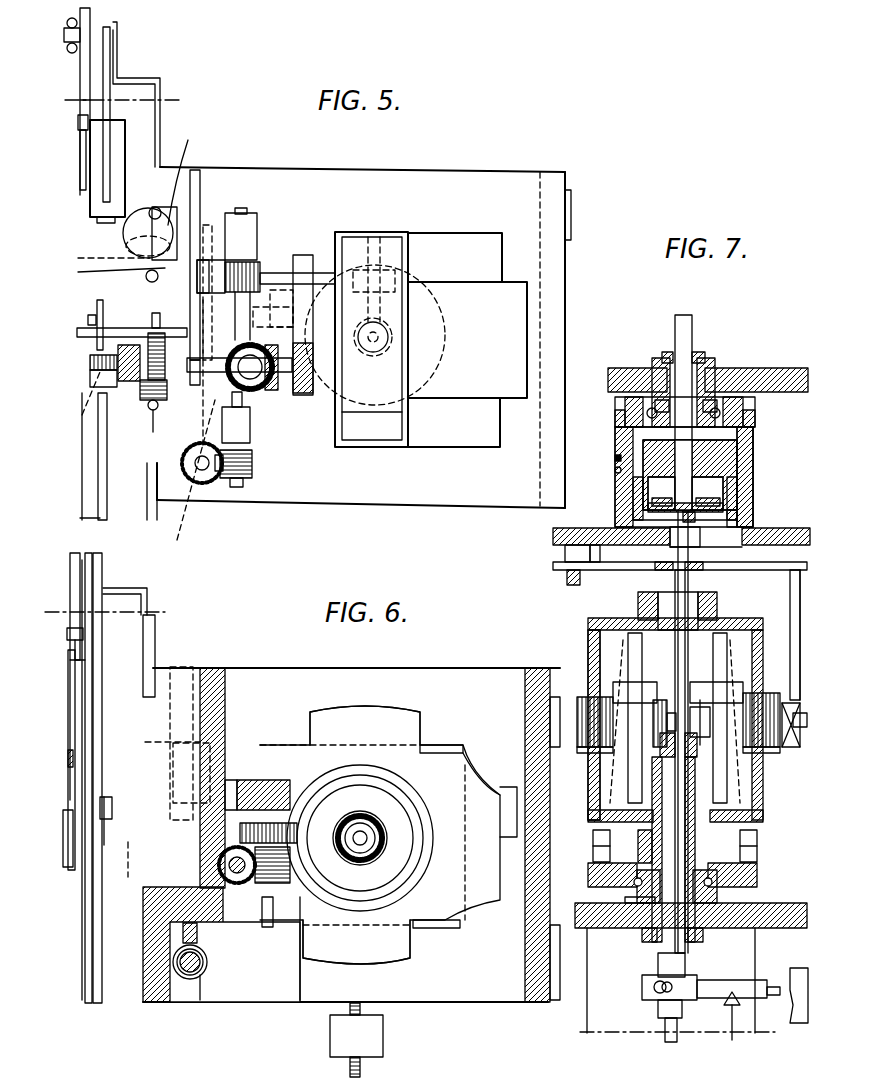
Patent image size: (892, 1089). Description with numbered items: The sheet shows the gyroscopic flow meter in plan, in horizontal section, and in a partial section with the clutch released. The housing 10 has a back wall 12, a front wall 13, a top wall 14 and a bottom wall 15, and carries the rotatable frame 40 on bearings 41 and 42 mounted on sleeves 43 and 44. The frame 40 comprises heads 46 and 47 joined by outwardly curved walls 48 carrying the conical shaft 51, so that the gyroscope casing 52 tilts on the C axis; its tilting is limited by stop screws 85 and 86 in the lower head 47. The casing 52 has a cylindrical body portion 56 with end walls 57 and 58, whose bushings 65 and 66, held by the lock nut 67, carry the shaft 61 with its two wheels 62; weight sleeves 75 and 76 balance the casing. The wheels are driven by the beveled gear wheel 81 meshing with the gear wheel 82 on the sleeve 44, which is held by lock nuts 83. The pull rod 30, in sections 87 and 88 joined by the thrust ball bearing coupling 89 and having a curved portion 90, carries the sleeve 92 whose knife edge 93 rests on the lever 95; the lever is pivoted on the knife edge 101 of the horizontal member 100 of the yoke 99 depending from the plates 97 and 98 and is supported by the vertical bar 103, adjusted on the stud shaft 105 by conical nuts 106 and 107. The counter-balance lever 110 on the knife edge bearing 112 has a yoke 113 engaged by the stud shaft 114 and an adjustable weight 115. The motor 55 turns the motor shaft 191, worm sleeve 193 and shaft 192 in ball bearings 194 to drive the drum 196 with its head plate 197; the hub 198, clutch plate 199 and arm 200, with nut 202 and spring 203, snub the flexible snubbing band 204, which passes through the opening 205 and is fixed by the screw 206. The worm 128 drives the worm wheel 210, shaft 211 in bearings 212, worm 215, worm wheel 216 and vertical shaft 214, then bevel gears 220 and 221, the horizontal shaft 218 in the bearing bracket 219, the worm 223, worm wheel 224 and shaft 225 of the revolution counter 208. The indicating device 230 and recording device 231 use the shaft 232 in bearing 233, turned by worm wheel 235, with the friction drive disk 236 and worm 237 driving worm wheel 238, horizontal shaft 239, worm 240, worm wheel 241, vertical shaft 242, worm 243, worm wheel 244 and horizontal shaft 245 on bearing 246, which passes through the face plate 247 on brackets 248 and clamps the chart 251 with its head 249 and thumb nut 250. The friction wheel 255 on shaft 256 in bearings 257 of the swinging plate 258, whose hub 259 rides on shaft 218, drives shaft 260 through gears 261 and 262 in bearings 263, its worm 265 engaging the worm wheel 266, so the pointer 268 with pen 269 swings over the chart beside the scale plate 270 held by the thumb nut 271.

In FIG. 5, the housing 10 is at (499, 180).
In FIG. 6, the housing 10 is at (490, 670).
In FIG. 7, the housing 10 is at (618, 368).
In FIG. 5, the back wall 12 is at (560, 193).
In FIG. 6, the back wall 12 is at (538, 1005).
In FIG. 6, the front wall 13 is at (143, 932).
In FIG. 5, the top wall 14 is at (388, 505).
In FIG. 7, the top wall 14 is at (784, 372).
In FIG. 6, the bottom wall 15 is at (463, 1005).
In FIG. 7, the bottom wall 15 is at (795, 913).
In FIG. 6, the pull rod 30 is at (370, 830).
In FIG. 7, the pull rod 30 is at (675, 583).
In FIG. 6, the rotatable frame 40 is at (345, 708).
In FIG. 7, the rotatable frame 40 is at (615, 441).
In FIG. 6, the bearing 41 is at (396, 850).
In FIG. 7, the bearing 41 is at (745, 410).
In FIG. 7, the bearing 42 is at (627, 900).
In FIG. 6, the sleeve 43 is at (355, 826).
In FIG. 7, the sleeve 43 is at (665, 352).
In FIG. 7, the sleeve 44 is at (696, 772).
In FIG. 6, the head 46 is at (421, 833).
In FIG. 7, the head 46 is at (753, 470).
In FIG. 7, the head 47 is at (742, 882).
In FIG. 6, the outwardly curved walls 48 is at (470, 790).
In FIG. 7, the outwardly curved walls 48 is at (608, 582).
In FIG. 6, the conical shaft 51 is at (512, 822).
In FIG. 6, the gyroscope casing 52 is at (292, 778).
In FIG. 7, the gyroscope casing 52 is at (588, 640).
In FIG. 5, the motor 55 is at (340, 230).
In FIG. 6, the cylindrical body portion 56 is at (478, 762).
In FIG. 7, the cylindrical body portion 56 is at (740, 618).
In FIG. 6, the end wall 57 is at (465, 749).
In FIG. 7, the end wall 57 is at (595, 812).
In FIG. 6, the end wall 58 is at (455, 928).
In FIG. 7, the end wall 58 is at (765, 765).
In FIG. 7, the shaft 61 is at (698, 707).
In FIG. 7, the wheels 62 is at (716, 648).
In FIG. 7, the bushing 65 is at (582, 700).
In FIG. 7, the bushing 66 is at (778, 755).
In FIG. 7, the lock nut 67 is at (585, 755).
In FIG. 7, the sleeve 75 is at (638, 598).
In FIG. 7, the sleeve 76 is at (638, 842).
In FIG. 7, the beveled gear wheel 81 is at (668, 714).
In FIG. 7, the gear wheel 82 is at (688, 749).
In FIG. 7, the lock nuts 83 is at (718, 898).
In FIG. 7, the stop screw 85 is at (593, 843).
In FIG. 7, the stop screw 86 is at (759, 845).
In FIG. 7, the lower section 87 is at (678, 1040).
In FIG. 7, the upper section 88 is at (686, 958).
In FIG. 7, the thrust ball bearing coupling 89 is at (642, 990).
In FIG. 7, the curved portion 90 is at (658, 700).
In FIG. 7, the sleeve 92 is at (657, 555).
In FIG. 7, the knife edge 93 is at (693, 560).
In FIG. 7, the lever 95 is at (570, 565).
In FIG. 6, the horizontal plate 97 is at (421, 732).
In FIG. 7, the horizontal plate 97 is at (568, 548).
In FIG. 6, the horizontal plate 98 is at (411, 957).
In FIG. 7, the horizontal plate 98 is at (787, 532).
In FIG. 7, the depending yoke 99 is at (580, 560).
In FIG. 7, the horizontal member 100 is at (580, 578).
In FIG. 7, the knife edge 101 is at (566, 578).
In FIG. 7, the vertical bar 103 is at (803, 630).
In FIG. 7, the stud shaft 105 is at (813, 707).
In FIG. 7, the conical nut 106 is at (788, 730).
In FIG. 7, the conical nut 107 is at (795, 703).
In FIG. 6, the counter-balance lever 110 is at (362, 1068).
In FIG. 7, the counter-balance lever 110 is at (770, 985).
In FIG. 7, the knife edge bearing 112 is at (743, 1022).
In FIG. 7, the yoke 113 is at (700, 998).
In FIG. 7, the stud shaft 114 is at (658, 995).
In FIG. 6, the adjustable weight 115 is at (384, 1044).
In FIG. 7, the adjustable weight 115 is at (795, 1023).
In FIG. 5, the worm 128 is at (440, 385).
In FIG. 6, the worm 128 is at (412, 808).
In FIG. 7, the worm 128 is at (757, 420).
In FIG. 5, the motor shaft 191 is at (393, 330).
In FIG. 7, the shaft 192 is at (693, 328).
In FIG. 5, the worm sleeve 193 is at (383, 348).
In FIG. 7, the ball bearings 194 is at (705, 352).
In FIG. 7, the drum 196 is at (740, 460).
In FIG. 7, the head plate 197 is at (740, 522).
In FIG. 7, the hub 198 is at (697, 522).
In FIG. 7, the clutch plate 199 is at (723, 508).
In FIG. 7, the arm 200 is at (625, 522).
In FIG. 7, the nut 202 is at (664, 493).
In FIG. 7, the spring 203 is at (710, 493).
In FIG. 7, the flexible snubbing band 204 is at (633, 486).
In FIG. 7, the opening 205 is at (615, 457).
In FIG. 7, the screw 206 is at (615, 470).
In FIG. 5, the revolution counter 208 is at (116, 137).
In FIG. 5, the worm wheel 210 is at (270, 308).
In FIG. 6, the worm wheel 210 is at (236, 780).
In FIG. 6, the shaft 211 is at (269, 928).
In FIG. 6, the bearings 212 is at (250, 780).
In FIG. 5, the vertical shaft 214 is at (262, 388).
In FIG. 6, the vertical shaft 214 is at (237, 884).
In FIG. 6, the worm 215 is at (300, 925).
In FIG. 6, the worm wheel 216 is at (200, 932).
In FIG. 5, the horizontal shaft 218 is at (218, 372).
In FIG. 5, the bearing bracket 219 is at (306, 262).
In FIG. 5, the bevel gear 220 is at (250, 422).
In FIG. 5, the bevel gear 221 is at (276, 392).
In FIG. 5, the worm 223 is at (78, 399).
In FIG. 5, the worm wheel 224 is at (95, 374).
In FIG. 5, the shaft 225 is at (100, 330).
In FIG. 5, the indicating device 230 is at (192, 171).
In FIG. 6, the recording device 231 is at (85, 890).
In FIG. 5, the shaft 232 is at (292, 273).
In FIG. 5, the bearing 233 is at (213, 232).
In FIG. 5, the worm wheel 235 is at (381, 235).
In FIG. 5, the friction drive disk 236 is at (201, 182).
In FIG. 5, the worm 237 is at (256, 266).
In FIG. 5, the worm wheel 238 is at (222, 294).
In FIG. 5, the horizontal shaft 239 is at (247, 213).
In FIG. 5, the worm 240 is at (254, 468).
In FIG. 5, the worm wheel 241 is at (221, 472).
In FIG. 5, the vertical shaft 242 is at (202, 470).
In FIG. 6, the vertical shaft 242 is at (183, 975).
In FIG. 5, the worm 243 is at (193, 478).
In FIG. 6, the worm 243 is at (192, 980).
In FIG. 5, the worm wheel 244 is at (203, 437).
In FIG. 6, the worm wheel 244 is at (228, 1045).
In FIG. 6, the horizontal shaft 245 is at (125, 870).
In FIG. 5, the bearing 246 is at (142, 318).
In FIG. 6, the bearing 246 is at (128, 800).
In FIG. 5, the face plate 247 is at (112, 45).
In FIG. 6, the face plate 247 is at (112, 725).
In FIG. 5, the brackets 248 is at (142, 78).
In FIG. 6, the brackets 248 is at (155, 647).
In FIG. 5, the head 249 is at (97, 313).
In FIG. 6, the head 249 is at (105, 797).
In FIG. 5, the thumb nut 250 is at (88, 322).
In FIG. 6, the thumb nut 250 is at (66, 860).
In FIG. 5, the chart 251 is at (96, 490).
In FIG. 6, the chart 251 is at (82, 950).
In FIG. 5, the friction wheel 255 is at (126, 244).
In FIG. 5, the shaft 256 is at (153, 207).
In FIG. 5, the bearings 257 is at (124, 228).
In FIG. 5, the swinging plate 258 is at (183, 225).
In FIG. 5, the hub 259 is at (195, 386).
In FIG. 5, the shaft 260 is at (152, 402).
In FIG. 5, the gear 261 is at (98, 256).
In FIG. 5, the gear 262 is at (105, 271).
In FIG. 5, the bearings 263 is at (148, 278).
In FIG. 5, the worm 265 is at (152, 413).
In FIG. 5, the worm wheel 266 is at (150, 382).
In FIG. 5, the pointer 268 is at (78, 120).
In FIG. 6, the pointer 268 is at (68, 746).
In FIG. 6, the pen 269 is at (80, 650).
In FIG. 5, the scale plate 270 is at (80, 80).
In FIG. 6, the scale plate 270 is at (70, 578).
In FIG. 5, the thumb nut 271 is at (70, 50).
In FIG. 7, the C axis C is at (696, 706).